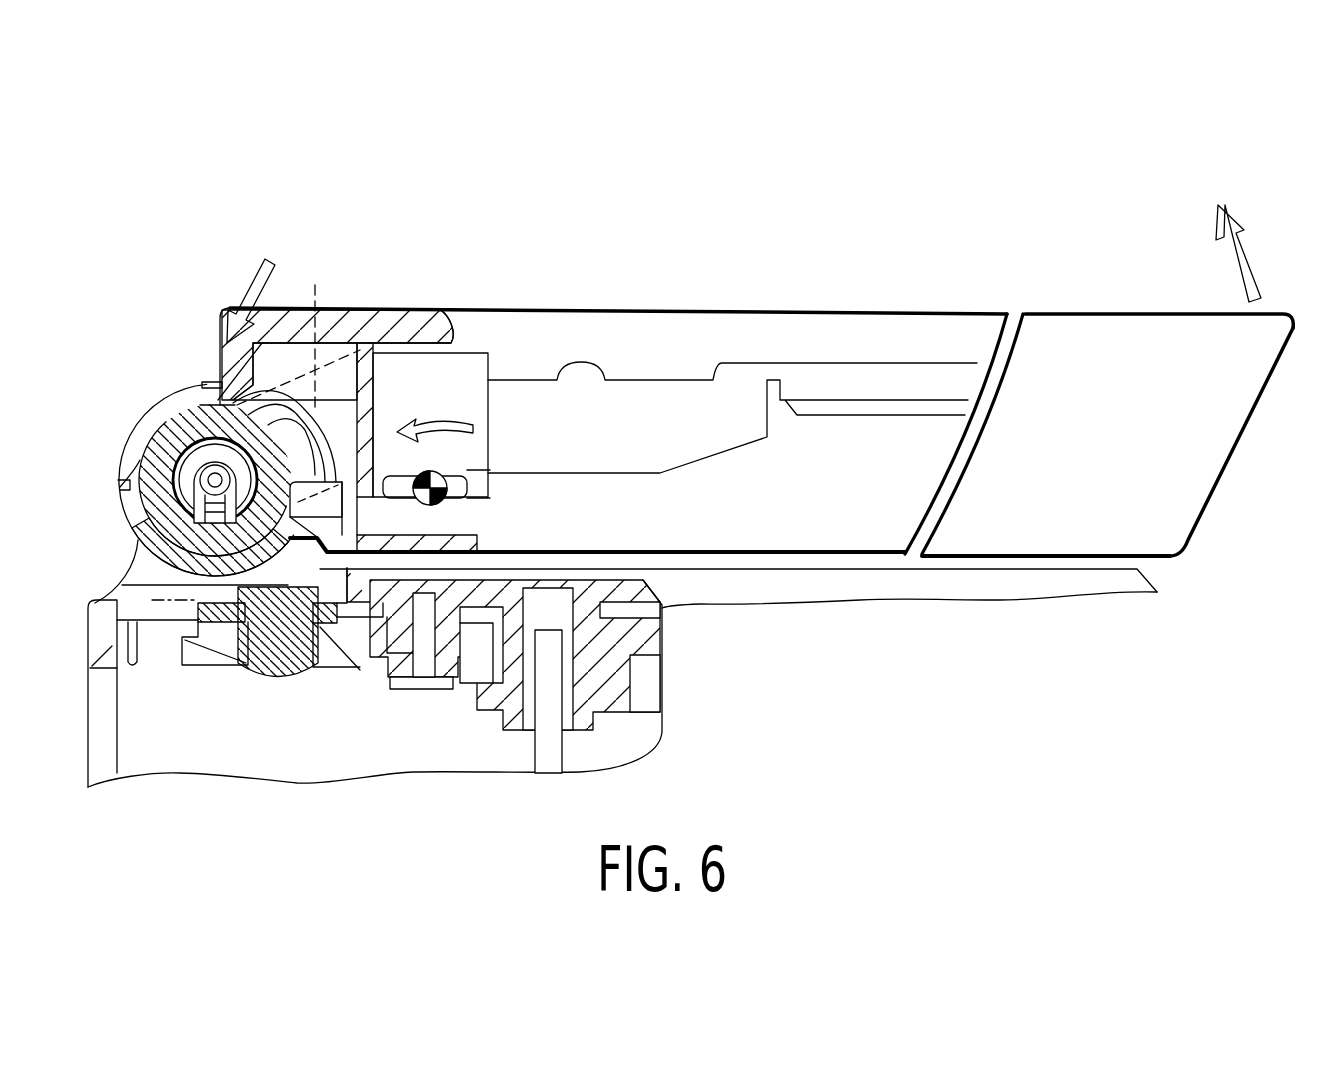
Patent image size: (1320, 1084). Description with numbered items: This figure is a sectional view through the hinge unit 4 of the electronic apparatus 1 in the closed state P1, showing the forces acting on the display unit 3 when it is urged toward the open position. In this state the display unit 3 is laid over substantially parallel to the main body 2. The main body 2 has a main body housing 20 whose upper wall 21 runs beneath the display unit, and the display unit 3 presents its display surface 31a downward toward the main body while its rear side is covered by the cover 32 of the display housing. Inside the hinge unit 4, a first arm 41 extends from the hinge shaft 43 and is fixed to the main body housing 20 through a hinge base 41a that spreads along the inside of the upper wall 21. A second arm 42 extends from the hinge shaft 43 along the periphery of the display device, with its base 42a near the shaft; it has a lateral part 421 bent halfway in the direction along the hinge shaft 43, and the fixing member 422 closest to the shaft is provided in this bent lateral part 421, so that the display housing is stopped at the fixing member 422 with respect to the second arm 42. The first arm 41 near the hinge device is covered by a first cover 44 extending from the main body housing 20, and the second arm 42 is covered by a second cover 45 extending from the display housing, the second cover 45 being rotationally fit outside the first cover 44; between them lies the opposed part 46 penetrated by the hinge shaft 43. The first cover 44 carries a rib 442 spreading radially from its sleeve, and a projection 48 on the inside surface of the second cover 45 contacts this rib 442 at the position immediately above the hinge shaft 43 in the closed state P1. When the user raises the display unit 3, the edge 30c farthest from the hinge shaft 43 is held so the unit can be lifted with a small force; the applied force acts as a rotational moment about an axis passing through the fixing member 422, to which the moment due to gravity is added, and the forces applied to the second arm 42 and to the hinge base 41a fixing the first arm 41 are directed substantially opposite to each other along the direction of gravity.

The electronic apparatus 1 is at (676, 670).
The main body 2 is at (738, 627).
The main body housing 20 is at (897, 588).
The upper wall 21 is at (663, 637).
The display unit 3 is at (1113, 380).
The edge 30c is at (1232, 455).
The display surface 31a is at (807, 553).
The cover 32 is at (883, 308).
The hinge unit 4 is at (135, 285).
The first arm 41 is at (205, 590).
The hinge base 41a is at (337, 653).
The second arm 42 is at (748, 376).
The base of the second arm 42a is at (280, 394).
The lateral part 421 is at (445, 402).
The fixing member 422 is at (462, 494).
The hinge shaft 43 is at (194, 412).
The first cover 44 is at (153, 510).
The rib 442 is at (152, 458).
The second cover 45 is at (120, 487).
The opposed part 46 is at (124, 421).
The projection 48 is at (194, 456).
The closed state P1 is at (974, 232).